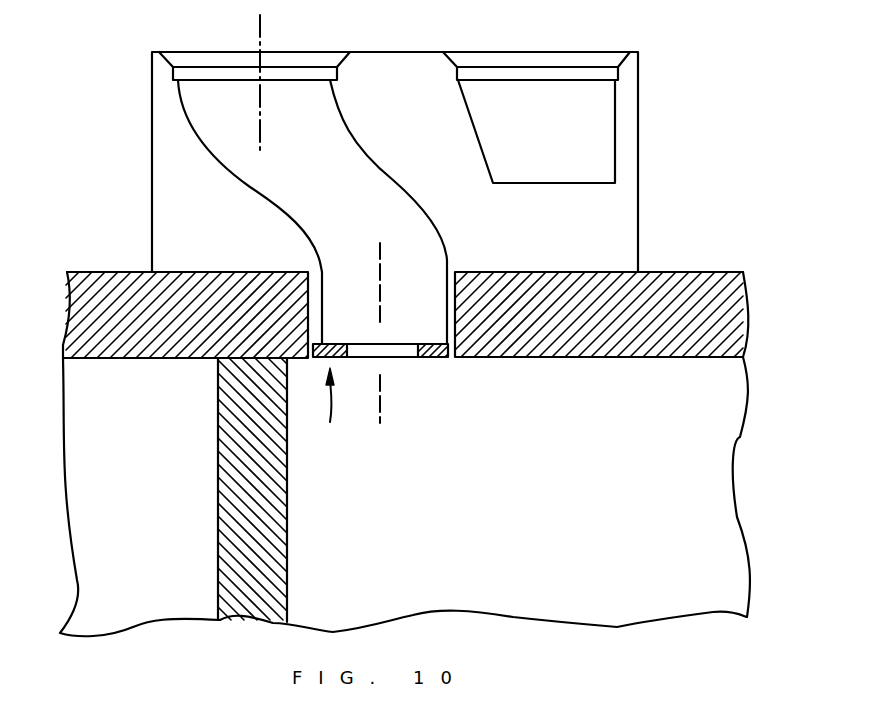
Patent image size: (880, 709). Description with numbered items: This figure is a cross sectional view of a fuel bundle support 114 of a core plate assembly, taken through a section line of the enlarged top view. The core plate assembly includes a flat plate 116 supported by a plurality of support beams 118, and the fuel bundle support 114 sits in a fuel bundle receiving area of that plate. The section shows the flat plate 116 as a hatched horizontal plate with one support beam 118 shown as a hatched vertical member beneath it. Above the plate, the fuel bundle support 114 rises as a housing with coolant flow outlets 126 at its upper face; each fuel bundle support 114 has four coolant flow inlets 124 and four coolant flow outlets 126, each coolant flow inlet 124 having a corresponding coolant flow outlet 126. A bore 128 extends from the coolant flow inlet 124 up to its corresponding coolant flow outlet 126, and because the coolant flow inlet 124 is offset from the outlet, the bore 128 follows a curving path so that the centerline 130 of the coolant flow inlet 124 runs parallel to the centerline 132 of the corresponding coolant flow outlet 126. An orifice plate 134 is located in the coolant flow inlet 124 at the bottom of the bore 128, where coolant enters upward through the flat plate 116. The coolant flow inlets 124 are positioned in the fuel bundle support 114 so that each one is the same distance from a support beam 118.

The fuel bundle support 114 is at (638, 177).
The flat plate 116 is at (638, 357).
The support beam 118 is at (217, 500).
The coolant flow inlet 124 is at (332, 410).
The coolant flow outlet 126 is at (290, 72).
The bore 128 is at (293, 163).
The centerline of coolant flow inlet 130 is at (382, 408).
The centerline of coolant flow outlet 132 is at (258, 40).
The orifice plate 134 is at (428, 358).